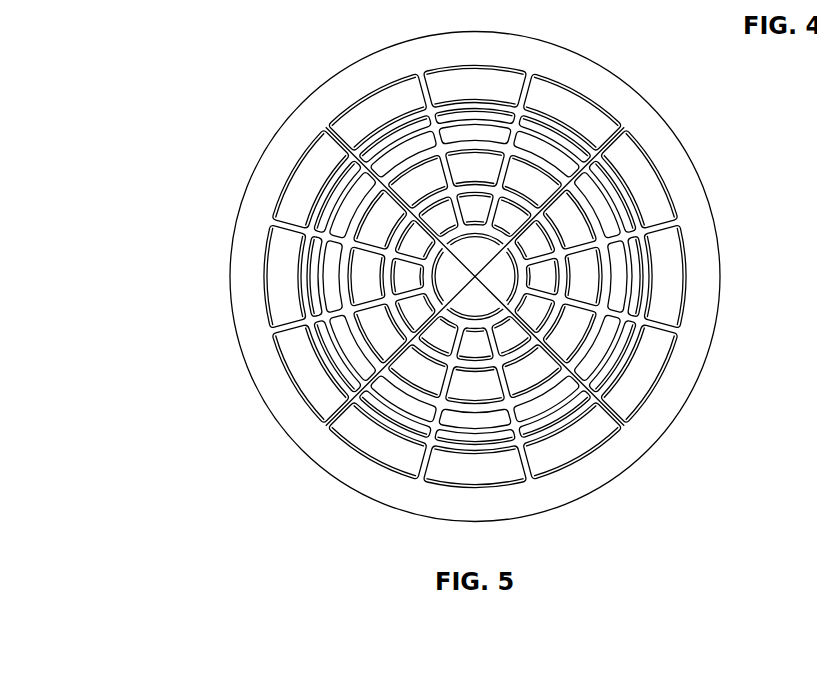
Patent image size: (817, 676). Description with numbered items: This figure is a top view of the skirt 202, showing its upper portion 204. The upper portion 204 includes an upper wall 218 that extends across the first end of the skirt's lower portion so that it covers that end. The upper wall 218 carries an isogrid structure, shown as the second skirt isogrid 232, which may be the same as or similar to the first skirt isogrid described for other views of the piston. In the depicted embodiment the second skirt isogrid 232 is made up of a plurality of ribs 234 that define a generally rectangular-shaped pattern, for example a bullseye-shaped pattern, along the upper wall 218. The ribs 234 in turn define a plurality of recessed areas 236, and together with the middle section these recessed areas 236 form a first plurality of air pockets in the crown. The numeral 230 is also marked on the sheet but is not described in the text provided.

In FIG. 5, the skirt 202 is at (363, 26).
In FIG. 5, the upper portion 204 is at (258, 277).
In FIG. 5, the upper wall 218 is at (675, 277).
In FIG. 5, the second skirt isogrid 232 is at (575, 442).
In FIG. 5, the ribs 234 is at (485, 457).
In FIG. 5, the recessed areas 236 is at (449, 478).
In FIG. 4, the cutout 230 is at (816, 213).